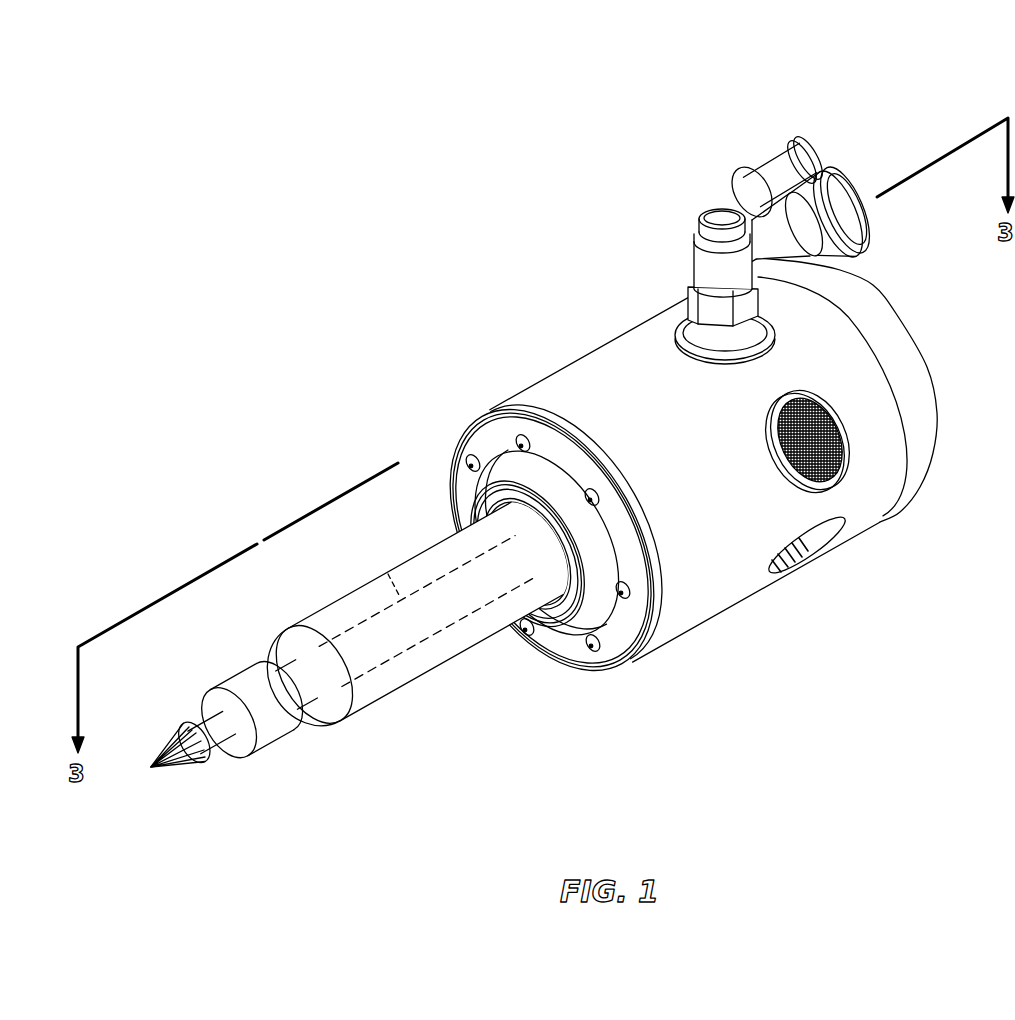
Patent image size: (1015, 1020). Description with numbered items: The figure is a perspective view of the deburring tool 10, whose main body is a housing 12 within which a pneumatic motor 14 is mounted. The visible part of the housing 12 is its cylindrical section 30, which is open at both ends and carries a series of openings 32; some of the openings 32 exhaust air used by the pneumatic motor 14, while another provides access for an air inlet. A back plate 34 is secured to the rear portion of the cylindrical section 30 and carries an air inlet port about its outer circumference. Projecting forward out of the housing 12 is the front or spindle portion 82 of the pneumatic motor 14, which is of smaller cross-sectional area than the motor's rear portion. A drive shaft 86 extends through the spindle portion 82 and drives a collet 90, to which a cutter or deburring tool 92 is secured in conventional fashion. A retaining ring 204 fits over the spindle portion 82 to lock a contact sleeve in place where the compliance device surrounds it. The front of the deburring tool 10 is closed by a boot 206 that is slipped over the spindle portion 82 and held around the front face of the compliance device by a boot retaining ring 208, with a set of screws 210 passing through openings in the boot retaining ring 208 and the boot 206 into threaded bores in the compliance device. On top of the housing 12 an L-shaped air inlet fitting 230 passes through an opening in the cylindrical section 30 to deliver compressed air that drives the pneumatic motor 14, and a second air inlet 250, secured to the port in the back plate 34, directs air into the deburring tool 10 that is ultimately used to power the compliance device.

The deburring tool 10 is at (456, 174).
The housing 12 is at (838, 573).
The pneumatic motor 14 is at (435, 686).
The cylindrical section 30 is at (752, 443).
The openings 32 is at (826, 438).
The back plate 34 is at (876, 330).
The front or spindle portion 82 is at (370, 690).
The drive shaft 86 is at (388, 578).
The collet 90 is at (264, 727).
The cutter or deburring tool 92 is at (200, 752).
The retaining ring 204 is at (553, 622).
The boot 206 is at (511, 472).
The boot retaining ring 208 is at (492, 440).
The screws 210 is at (470, 467).
The air inlet fitting 230 is at (832, 190).
The air inlet 250 is at (797, 152).